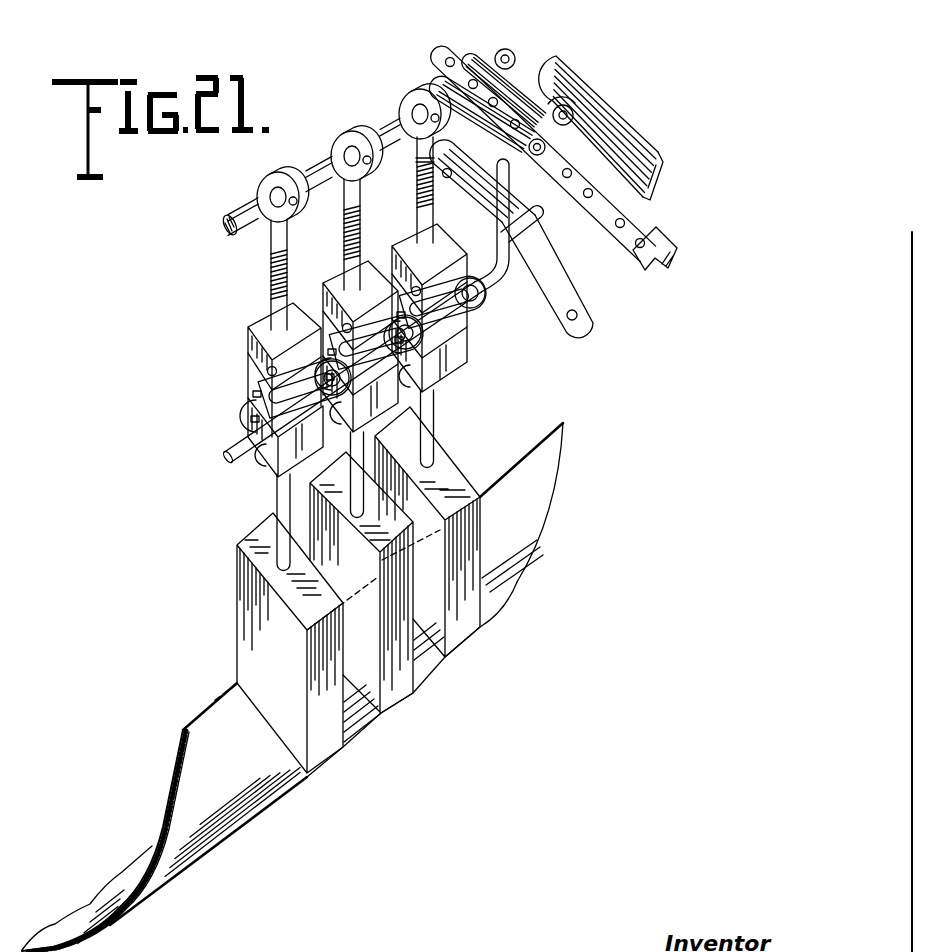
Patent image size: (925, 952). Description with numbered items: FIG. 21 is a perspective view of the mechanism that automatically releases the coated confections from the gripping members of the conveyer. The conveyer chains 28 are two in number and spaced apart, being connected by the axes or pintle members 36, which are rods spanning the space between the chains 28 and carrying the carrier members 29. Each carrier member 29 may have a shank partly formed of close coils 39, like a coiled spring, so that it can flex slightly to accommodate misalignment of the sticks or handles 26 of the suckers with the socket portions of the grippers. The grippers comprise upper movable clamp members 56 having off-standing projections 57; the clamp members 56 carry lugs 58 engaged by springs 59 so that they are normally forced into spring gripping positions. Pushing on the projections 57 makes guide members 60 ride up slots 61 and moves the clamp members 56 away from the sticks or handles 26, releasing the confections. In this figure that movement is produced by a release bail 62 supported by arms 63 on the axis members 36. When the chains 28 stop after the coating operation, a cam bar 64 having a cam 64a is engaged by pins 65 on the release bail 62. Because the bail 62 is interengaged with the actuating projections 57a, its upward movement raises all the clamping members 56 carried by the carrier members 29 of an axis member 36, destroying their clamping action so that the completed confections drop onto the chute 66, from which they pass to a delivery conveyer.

The sticks or handles 26 is at (278, 497).
The chains 28 is at (637, 215).
The carrier members 29 is at (279, 230).
The axes or pintle members 36 is at (320, 170).
The close coils 39 is at (272, 268).
The upper movable clamp members 56 is at (466, 366).
The off-standing projections 57 is at (247, 342).
The actuating projections 57a is at (340, 390).
The lugs 58 is at (258, 382).
The springs 59 is at (268, 370).
The guide members 60 is at (252, 410).
The slots 61 is at (255, 397).
The release bail 62 is at (237, 449).
The arms 63 is at (422, 167).
The cam bar 64 is at (543, 260).
The cam 64a is at (472, 182).
The pins 65 is at (533, 227).
The chute 66 is at (540, 482).